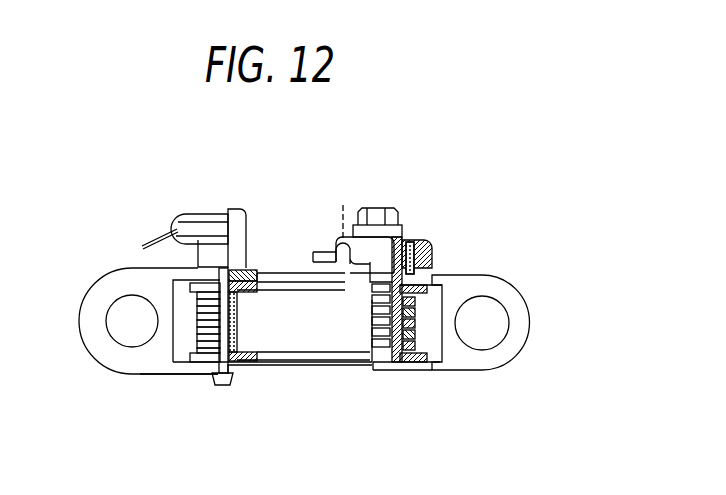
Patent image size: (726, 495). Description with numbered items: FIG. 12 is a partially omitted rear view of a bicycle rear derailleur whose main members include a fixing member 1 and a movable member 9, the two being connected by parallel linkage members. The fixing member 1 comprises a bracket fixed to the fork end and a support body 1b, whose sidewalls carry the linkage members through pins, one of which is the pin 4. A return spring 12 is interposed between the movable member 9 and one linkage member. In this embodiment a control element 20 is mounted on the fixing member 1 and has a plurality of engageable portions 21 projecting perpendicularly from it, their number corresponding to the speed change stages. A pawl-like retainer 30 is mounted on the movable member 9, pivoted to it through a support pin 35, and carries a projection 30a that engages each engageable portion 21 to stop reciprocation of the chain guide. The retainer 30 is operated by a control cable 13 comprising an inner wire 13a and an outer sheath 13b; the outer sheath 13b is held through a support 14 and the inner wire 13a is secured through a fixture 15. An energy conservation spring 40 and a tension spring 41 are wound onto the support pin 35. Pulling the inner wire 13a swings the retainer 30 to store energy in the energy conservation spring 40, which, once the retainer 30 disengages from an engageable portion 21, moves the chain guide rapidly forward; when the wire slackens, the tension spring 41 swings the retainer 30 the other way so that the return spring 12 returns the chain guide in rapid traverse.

The fixing member 1 is at (103, 380).
The support body 1b is at (161, 375).
The pin 4 is at (226, 387).
The movable member 9 is at (517, 298).
The return spring 12 is at (250, 329).
The control cable 13 is at (177, 195).
The inner wire 13a is at (146, 243).
The outer sheath 13b is at (192, 222).
The support 14 is at (228, 209).
The fixture 15 is at (386, 212).
The control element 20 is at (298, 274).
The engageable portion 21 is at (333, 247).
The retainer 30 is at (362, 240).
The projection 30a is at (348, 208).
The support pin 35 is at (422, 242).
The energy conservation spring 40 is at (419, 336).
The tension spring 41 is at (432, 253).